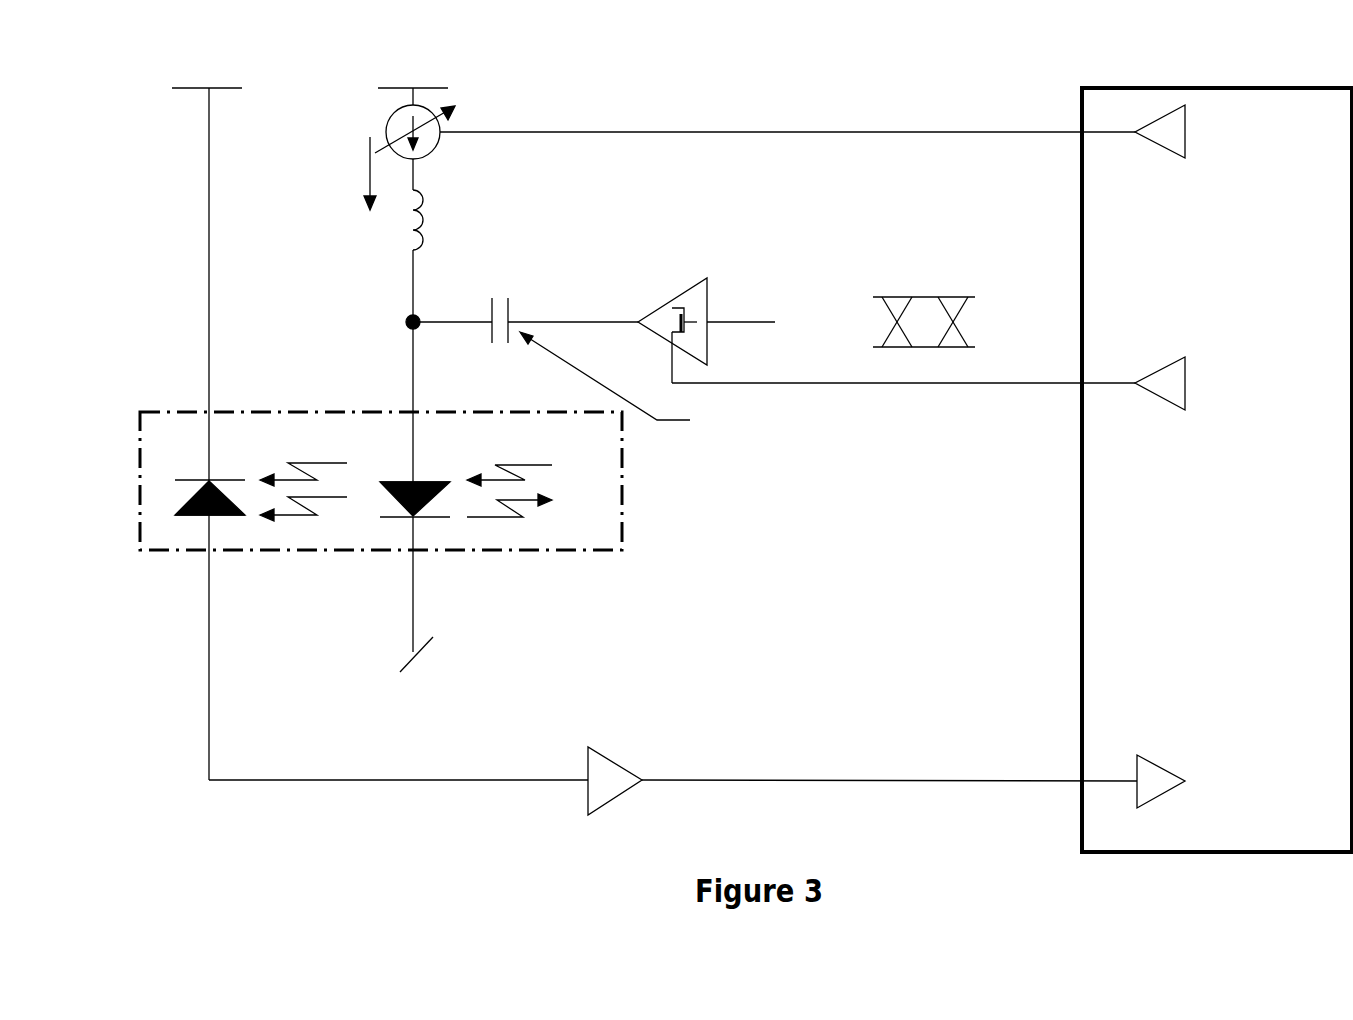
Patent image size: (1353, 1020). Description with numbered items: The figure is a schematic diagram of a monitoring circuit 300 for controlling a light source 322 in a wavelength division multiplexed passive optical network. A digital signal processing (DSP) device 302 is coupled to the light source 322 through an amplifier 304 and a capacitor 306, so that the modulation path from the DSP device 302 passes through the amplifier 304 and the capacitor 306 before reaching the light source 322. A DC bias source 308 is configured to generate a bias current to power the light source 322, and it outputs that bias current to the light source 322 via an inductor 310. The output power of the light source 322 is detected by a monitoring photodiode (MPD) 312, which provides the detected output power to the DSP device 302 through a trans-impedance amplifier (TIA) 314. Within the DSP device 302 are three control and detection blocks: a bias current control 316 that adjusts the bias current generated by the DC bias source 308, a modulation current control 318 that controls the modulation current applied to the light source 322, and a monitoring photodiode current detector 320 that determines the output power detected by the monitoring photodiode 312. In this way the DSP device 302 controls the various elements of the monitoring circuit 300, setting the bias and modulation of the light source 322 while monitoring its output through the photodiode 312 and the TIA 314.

The monitoring circuit 300 is at (727, 66).
The digital signal processing (DSP) device 302 is at (1217, 470).
The amplifier 304 is at (687, 290).
The capacitor 306 is at (522, 289).
The DC bias source 308 is at (413, 108).
The inductor 310 is at (365, 230).
The monitoring photodiode (MPD) 312 is at (197, 465).
The trans-impedance amplifier (TIA) 314 is at (861, 814).
The bias current control 316 is at (1244, 136).
The modulation current control 318 is at (1244, 381).
The monitoring photodiode current detector 320 is at (1245, 783).
The light source 322 is at (416, 450).